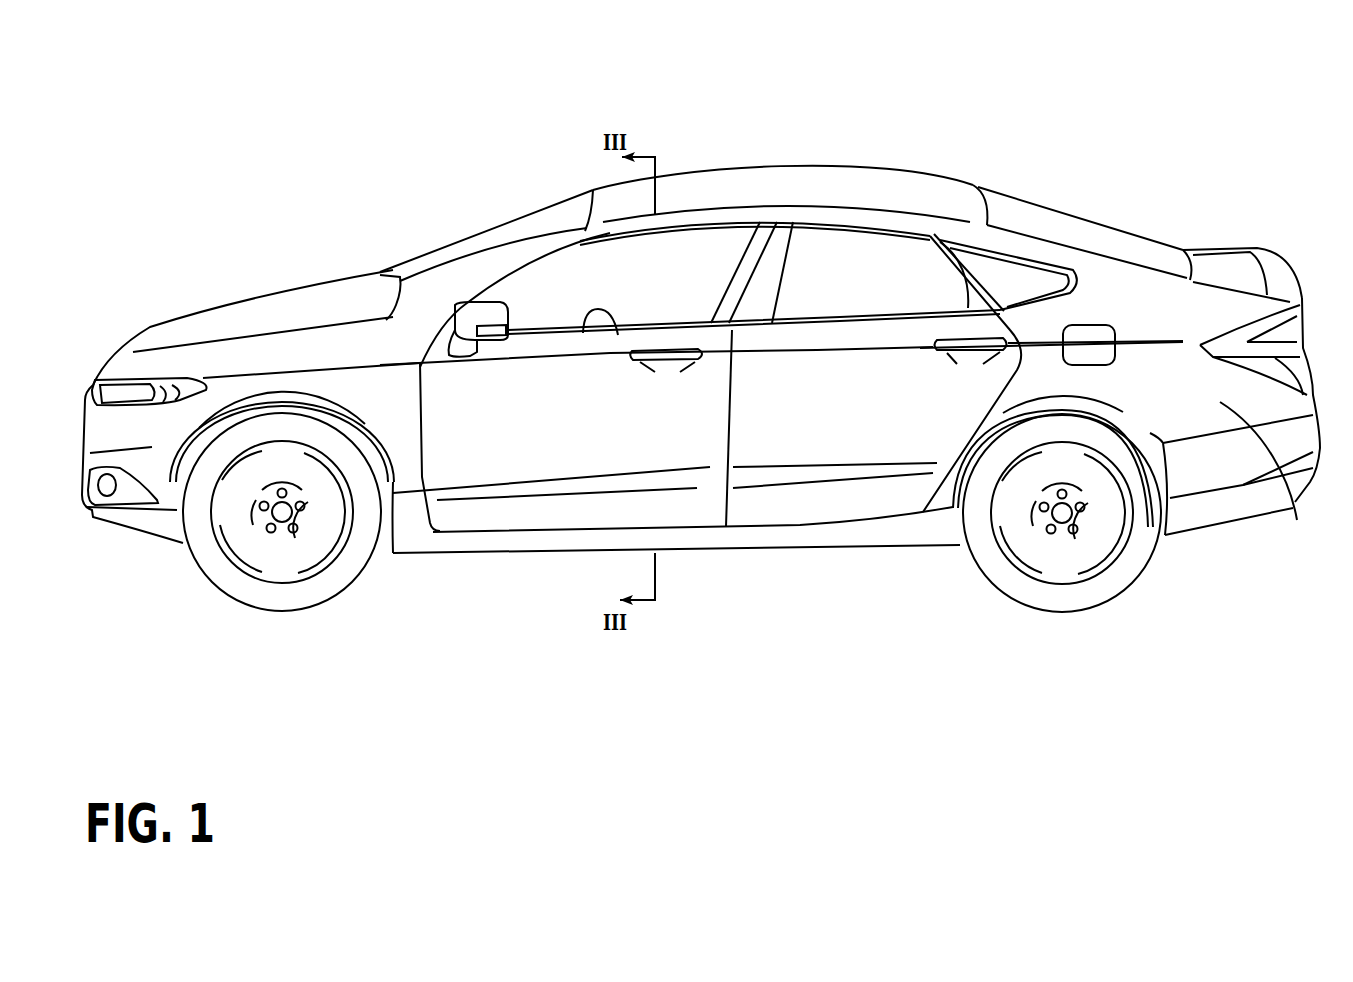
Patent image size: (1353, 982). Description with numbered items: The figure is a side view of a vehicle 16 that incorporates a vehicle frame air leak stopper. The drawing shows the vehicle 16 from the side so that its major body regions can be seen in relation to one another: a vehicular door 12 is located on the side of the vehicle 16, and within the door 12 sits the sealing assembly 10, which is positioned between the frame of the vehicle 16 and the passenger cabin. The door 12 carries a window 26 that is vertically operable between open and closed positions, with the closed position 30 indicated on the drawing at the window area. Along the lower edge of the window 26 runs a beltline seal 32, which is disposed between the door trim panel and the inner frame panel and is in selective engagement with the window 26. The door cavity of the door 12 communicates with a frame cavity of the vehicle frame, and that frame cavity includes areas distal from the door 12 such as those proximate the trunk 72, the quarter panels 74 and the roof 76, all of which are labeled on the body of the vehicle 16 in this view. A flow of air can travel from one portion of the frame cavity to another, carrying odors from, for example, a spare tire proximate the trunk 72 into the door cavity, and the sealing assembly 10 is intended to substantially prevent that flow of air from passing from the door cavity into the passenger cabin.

The sealing assembly 10 is at (677, 265).
The vehicular door 12 is at (520, 505).
The vehicle 16 is at (1050, 182).
The window 26 is at (550, 287).
The closed position 30 is at (740, 262).
The beltline seal 32 is at (618, 335).
The trunk 72 is at (1207, 240).
The quarter panels 74 is at (1297, 520).
The roof 76 is at (940, 195).